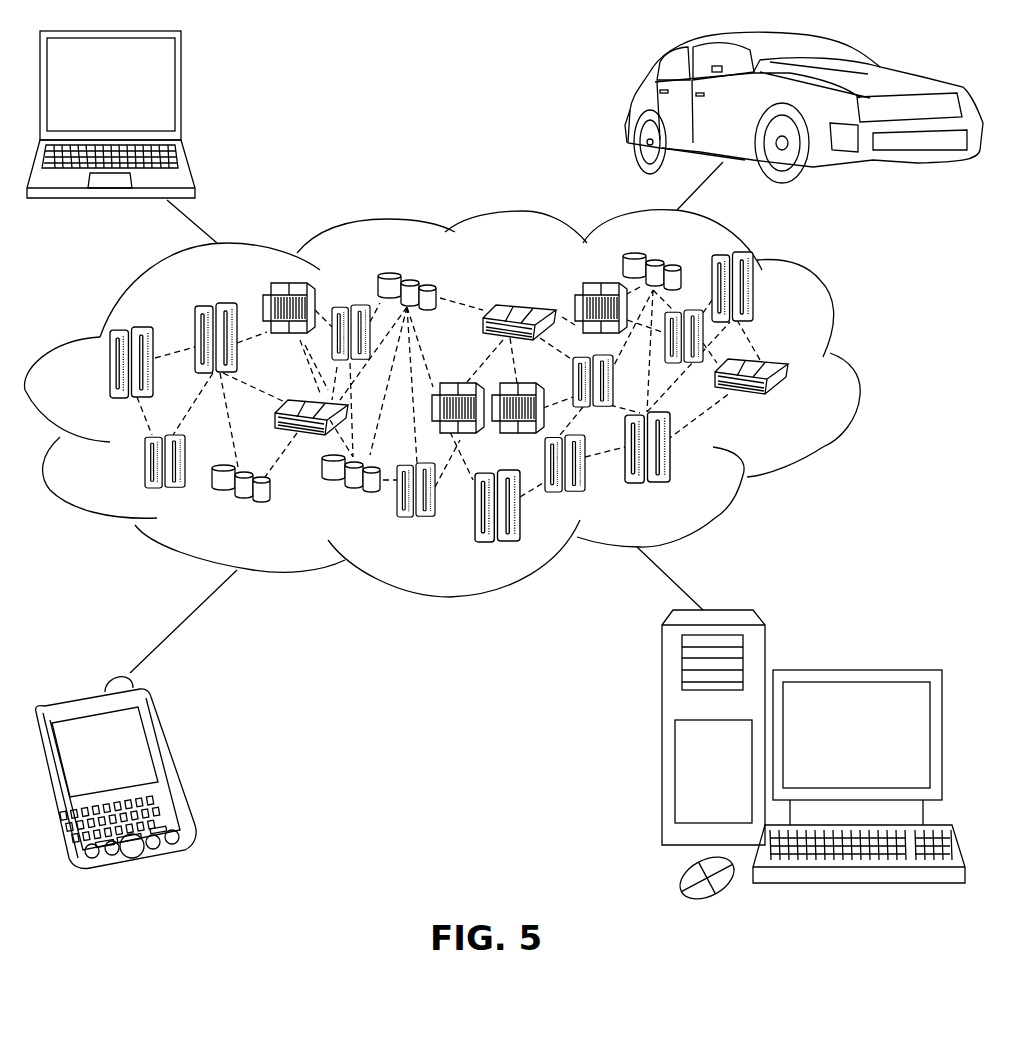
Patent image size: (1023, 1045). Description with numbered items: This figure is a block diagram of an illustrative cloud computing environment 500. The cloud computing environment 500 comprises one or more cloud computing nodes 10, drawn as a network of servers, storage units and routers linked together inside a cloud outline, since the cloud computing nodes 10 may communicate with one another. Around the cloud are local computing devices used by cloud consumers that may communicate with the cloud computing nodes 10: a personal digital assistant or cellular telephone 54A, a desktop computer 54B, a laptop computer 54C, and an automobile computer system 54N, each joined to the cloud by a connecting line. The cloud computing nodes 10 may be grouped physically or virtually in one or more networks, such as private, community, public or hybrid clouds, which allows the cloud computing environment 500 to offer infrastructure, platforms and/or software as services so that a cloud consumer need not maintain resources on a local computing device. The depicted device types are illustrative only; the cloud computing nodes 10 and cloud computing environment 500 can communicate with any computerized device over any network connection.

The cloud computing node 10 is at (805, 407).
The cloud computing environment 500 is at (484, 403).
The personal digital assistant or cellular telephone 54A is at (172, 763).
The desktop computer 54B is at (853, 670).
The laptop computer 54C is at (182, 93).
The automobile computer system 54N is at (627, 108).